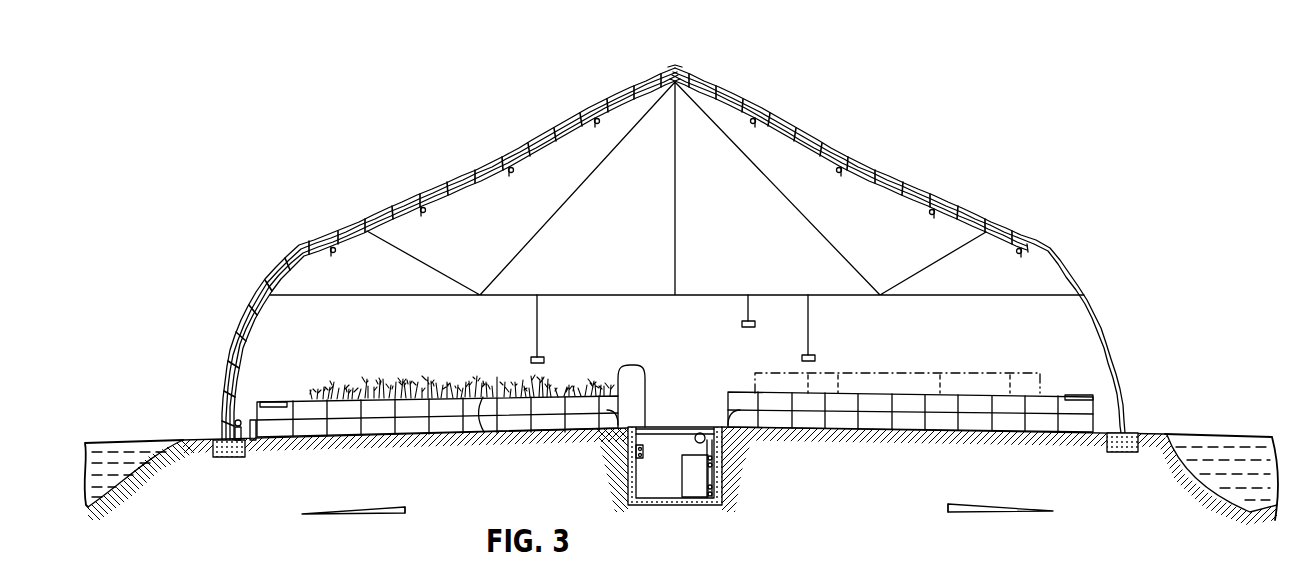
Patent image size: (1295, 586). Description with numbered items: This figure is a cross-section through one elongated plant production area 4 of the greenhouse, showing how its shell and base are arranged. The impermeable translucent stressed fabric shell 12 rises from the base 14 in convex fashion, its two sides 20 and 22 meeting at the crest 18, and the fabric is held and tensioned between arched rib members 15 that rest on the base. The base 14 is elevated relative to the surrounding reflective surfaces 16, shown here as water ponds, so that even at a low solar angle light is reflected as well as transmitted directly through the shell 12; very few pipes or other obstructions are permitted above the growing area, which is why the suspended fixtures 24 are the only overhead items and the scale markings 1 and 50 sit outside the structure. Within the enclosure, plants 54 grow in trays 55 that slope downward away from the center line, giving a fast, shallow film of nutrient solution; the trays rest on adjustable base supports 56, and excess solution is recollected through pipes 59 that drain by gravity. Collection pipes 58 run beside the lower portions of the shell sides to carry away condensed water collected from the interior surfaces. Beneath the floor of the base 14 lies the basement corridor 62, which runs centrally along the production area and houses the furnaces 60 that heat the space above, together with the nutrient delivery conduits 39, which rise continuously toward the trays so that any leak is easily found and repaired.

The scale indicator 1 is at (676, 508).
The plant production area 4 is at (650, 346).
The stressed fabric shell 12 is at (239, 327).
The base 14 is at (414, 438).
The arched rib members 15 is at (246, 343).
The reflective surfaces 16 is at (152, 441).
The crest 18 is at (676, 66).
The shell side 20 is at (1124, 338).
The shell side 22 is at (288, 261).
The lamp 24 is at (545, 359).
The nutrient delivery conduit 39 is at (646, 372).
The scale bar 50 is at (677, 519).
The plant 54 is at (386, 393).
The tray 55 is at (490, 437).
The base support 56 is at (240, 410).
The collection pipe 58 is at (238, 458).
The pipe 59 is at (255, 445).
The furnace 60 is at (700, 466).
The basement corridor 62 is at (674, 481).